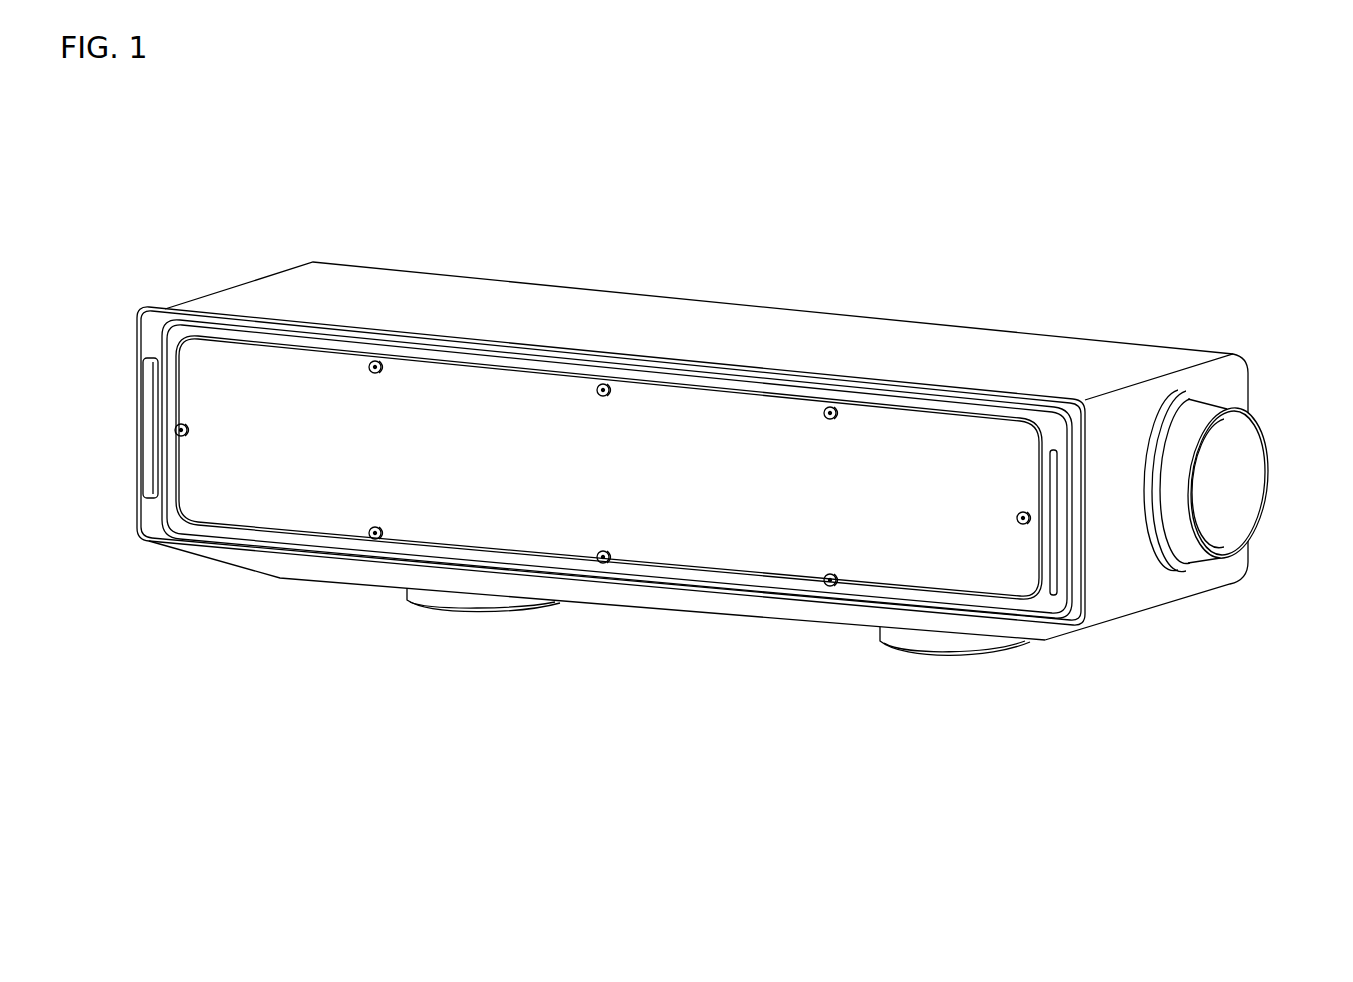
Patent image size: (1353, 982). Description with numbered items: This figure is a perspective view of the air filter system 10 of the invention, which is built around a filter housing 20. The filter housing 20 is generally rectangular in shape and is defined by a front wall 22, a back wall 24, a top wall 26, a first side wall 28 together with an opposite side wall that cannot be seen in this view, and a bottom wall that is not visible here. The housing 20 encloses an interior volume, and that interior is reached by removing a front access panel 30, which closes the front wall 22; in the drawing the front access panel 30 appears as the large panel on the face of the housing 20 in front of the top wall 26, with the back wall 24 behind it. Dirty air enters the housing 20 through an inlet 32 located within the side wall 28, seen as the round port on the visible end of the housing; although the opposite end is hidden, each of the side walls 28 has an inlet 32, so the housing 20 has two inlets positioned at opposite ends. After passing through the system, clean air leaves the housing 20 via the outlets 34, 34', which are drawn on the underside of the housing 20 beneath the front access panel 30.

The air filter system 10 is at (716, 436).
The filter housing 20 is at (716, 461).
The front wall 22 is at (1057, 613).
The back wall 24 is at (1248, 380).
The top wall 26 is at (628, 312).
The first side wall 28 is at (1168, 587).
The front access panel 30 is at (178, 518).
The inlet 32 is at (1258, 457).
The outlet 34 is at (479, 643).
The outlet 34' is at (955, 682).